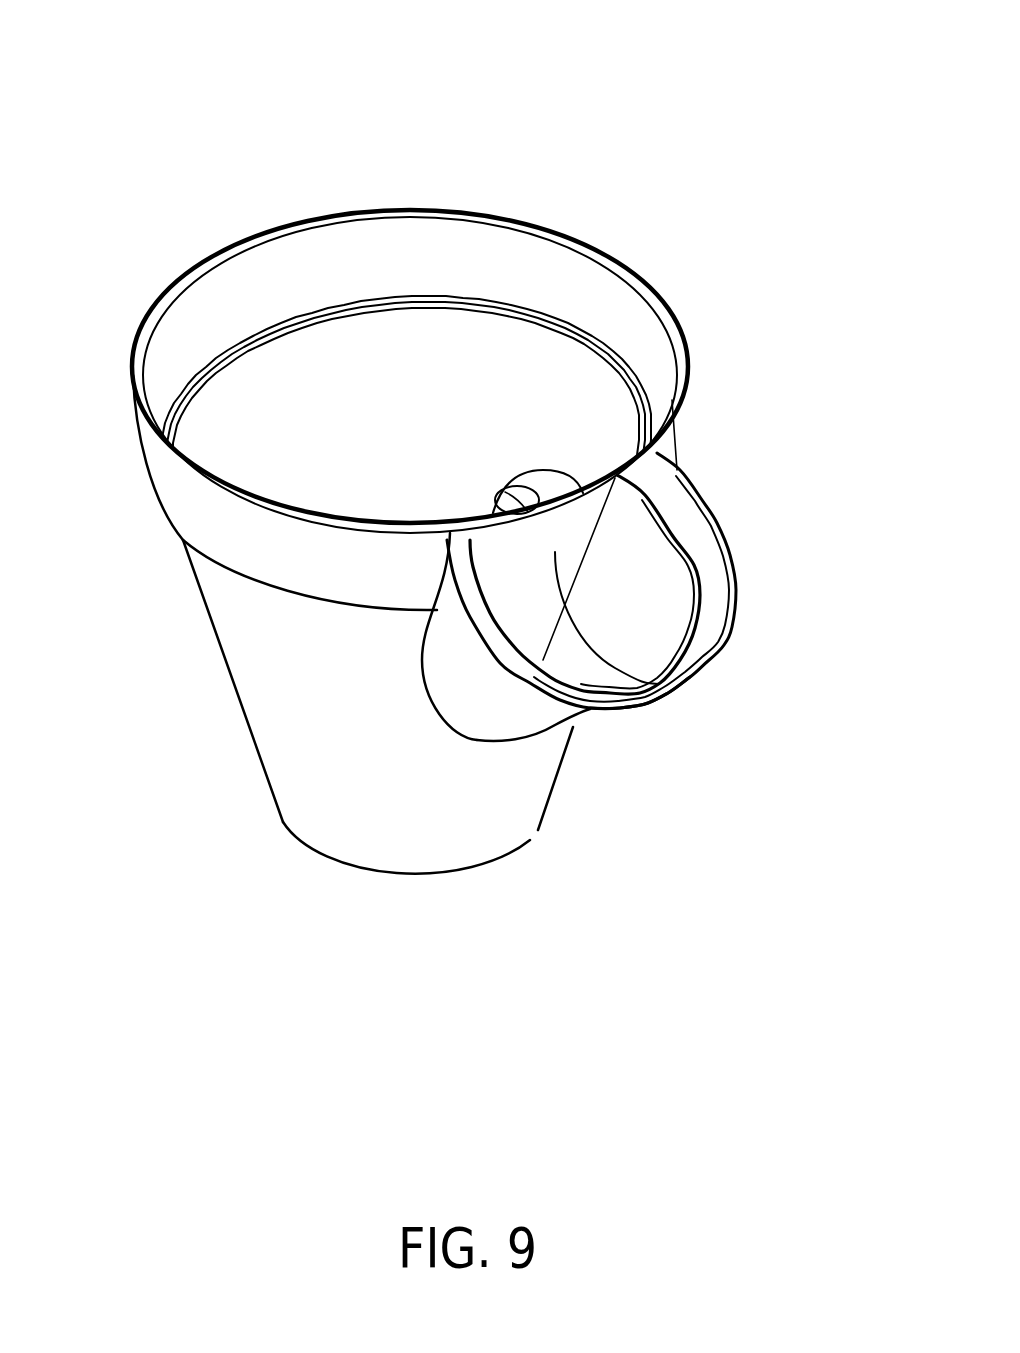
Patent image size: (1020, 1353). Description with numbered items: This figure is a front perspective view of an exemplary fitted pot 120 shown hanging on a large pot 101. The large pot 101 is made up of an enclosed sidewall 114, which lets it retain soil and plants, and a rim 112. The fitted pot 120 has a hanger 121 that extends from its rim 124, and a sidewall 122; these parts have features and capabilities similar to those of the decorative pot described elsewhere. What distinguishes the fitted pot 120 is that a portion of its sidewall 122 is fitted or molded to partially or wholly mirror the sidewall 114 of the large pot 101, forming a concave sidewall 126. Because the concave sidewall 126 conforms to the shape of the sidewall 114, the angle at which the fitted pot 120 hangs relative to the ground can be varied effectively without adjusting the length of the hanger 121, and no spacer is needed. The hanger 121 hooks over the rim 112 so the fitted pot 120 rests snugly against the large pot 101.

The large pot 101 is at (177, 183).
The rim 112 is at (412, 250).
The sidewall 114 is at (330, 770).
The fitted pot 120 is at (792, 368).
The hanger 121 is at (528, 472).
The sidewall 122 is at (473, 703).
The rim 124 is at (707, 558).
The concave sidewall 126 is at (658, 690).